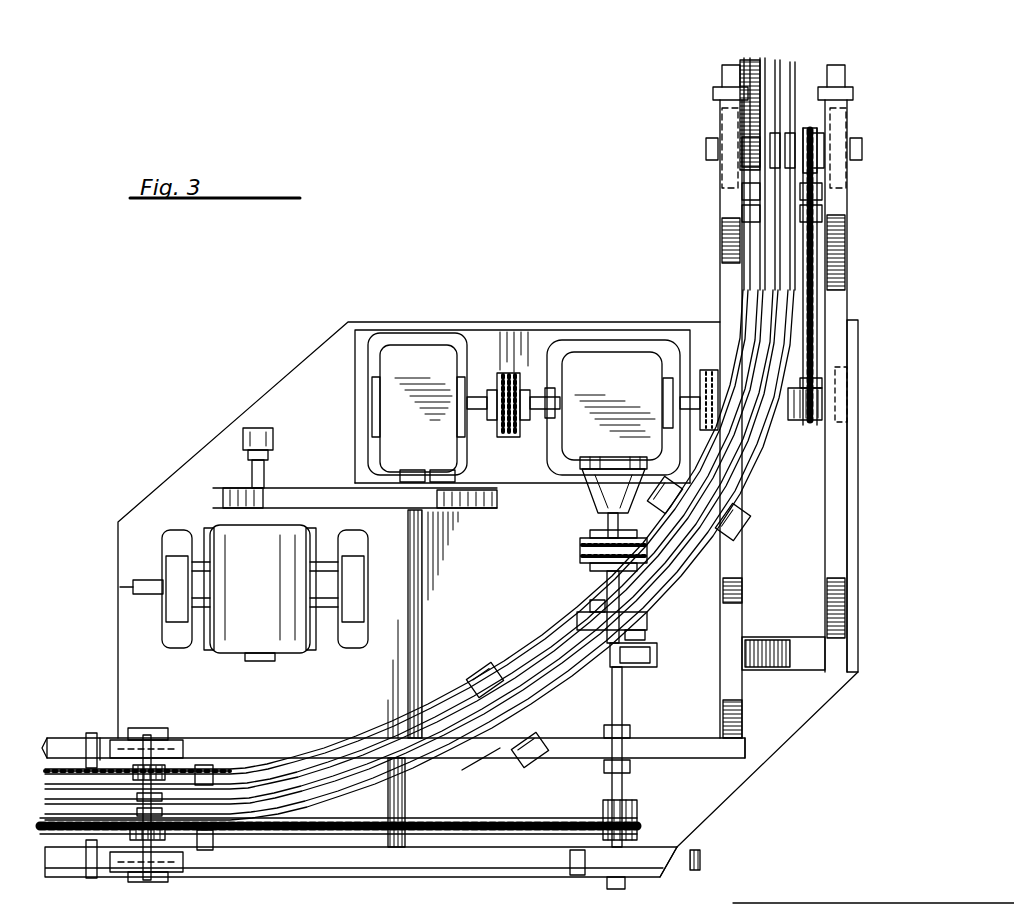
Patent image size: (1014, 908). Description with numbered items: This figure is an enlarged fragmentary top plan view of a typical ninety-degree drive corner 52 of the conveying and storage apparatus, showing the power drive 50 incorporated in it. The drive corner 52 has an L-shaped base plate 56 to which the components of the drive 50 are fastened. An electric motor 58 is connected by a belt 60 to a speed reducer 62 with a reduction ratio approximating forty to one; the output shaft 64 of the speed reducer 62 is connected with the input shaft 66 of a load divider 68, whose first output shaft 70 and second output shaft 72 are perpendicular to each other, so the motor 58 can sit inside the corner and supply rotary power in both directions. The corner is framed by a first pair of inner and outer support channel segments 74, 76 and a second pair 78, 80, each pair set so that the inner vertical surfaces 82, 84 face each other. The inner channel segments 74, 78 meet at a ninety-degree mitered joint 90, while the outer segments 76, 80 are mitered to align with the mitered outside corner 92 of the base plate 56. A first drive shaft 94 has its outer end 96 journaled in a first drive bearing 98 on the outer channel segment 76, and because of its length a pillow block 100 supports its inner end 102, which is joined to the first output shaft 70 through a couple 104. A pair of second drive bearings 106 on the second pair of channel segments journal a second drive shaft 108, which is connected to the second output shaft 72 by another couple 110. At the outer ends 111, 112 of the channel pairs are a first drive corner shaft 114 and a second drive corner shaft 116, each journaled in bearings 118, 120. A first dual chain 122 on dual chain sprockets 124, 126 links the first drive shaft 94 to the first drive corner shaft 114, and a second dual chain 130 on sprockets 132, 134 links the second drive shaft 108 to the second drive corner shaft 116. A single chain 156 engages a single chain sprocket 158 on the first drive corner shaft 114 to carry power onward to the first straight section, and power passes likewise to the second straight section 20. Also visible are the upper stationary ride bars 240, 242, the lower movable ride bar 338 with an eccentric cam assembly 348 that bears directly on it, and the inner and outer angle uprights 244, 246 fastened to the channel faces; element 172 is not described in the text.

The second straight section 20 is at (730, 76).
The drive 50 is at (252, 392).
The drive corner 52 is at (365, 330).
The base plate 56 is at (712, 806).
The electric motor 58 is at (230, 562).
The belt 60 is at (315, 498).
The speed reducer 62 is at (431, 369).
The output shaft 64 is at (480, 392).
The input shaft 66 is at (532, 418).
The load divider 68 is at (636, 386).
The first output shaft 70 is at (600, 520).
The second output shaft 72 is at (660, 456).
The inner support channel segment 74 is at (312, 752).
The outer support channel segment 76 is at (462, 860).
The inner support channel segment 78 is at (722, 278).
The outer support channel segment 80 is at (845, 483).
The inner vertical surface 82 is at (744, 620).
The inner vertical surface 84 is at (828, 626).
The mitered joint 90 is at (745, 745).
The mitered outside corner 92 is at (757, 778).
The first drive shaft 94 is at (624, 714).
The outer end 96 is at (612, 889).
The first drive bearing 98 is at (578, 862).
The pillow block 100 is at (657, 655).
The inner end 102 is at (605, 580).
The couple 104 is at (582, 548).
The second drive bearings 106 is at (748, 350).
The second drive shaft 108 is at (790, 420).
The couple 110 is at (703, 370).
The outer end 111 is at (100, 738).
The outer end 112 is at (850, 112).
The first drive corner shaft 114 is at (154, 878).
The second drive corner shaft 116 is at (852, 146).
The bearing 118 is at (165, 735).
The bearing 120 is at (720, 140).
The first dual chain 122 is at (405, 858).
The dual chain sprocket 124 is at (640, 820).
The dual chain sprocket 126 is at (78, 858).
The second dual chain 130 is at (812, 300).
The dual chain sprocket 132 is at (815, 395).
The dual chain sprocket 134 is at (815, 165).
The single chain 156 is at (72, 760).
The single chain sprocket 158 is at (178, 762).
The right support post 172 is at (842, 84).
The ride bar 240 is at (422, 736).
The ride bar 242 is at (462, 772).
The inner angle upright 244 is at (742, 210).
The outer angle upright 246 is at (838, 212).
The lower movable ride bar 338 is at (783, 60).
The eccentric cam assembly 348 is at (645, 626).